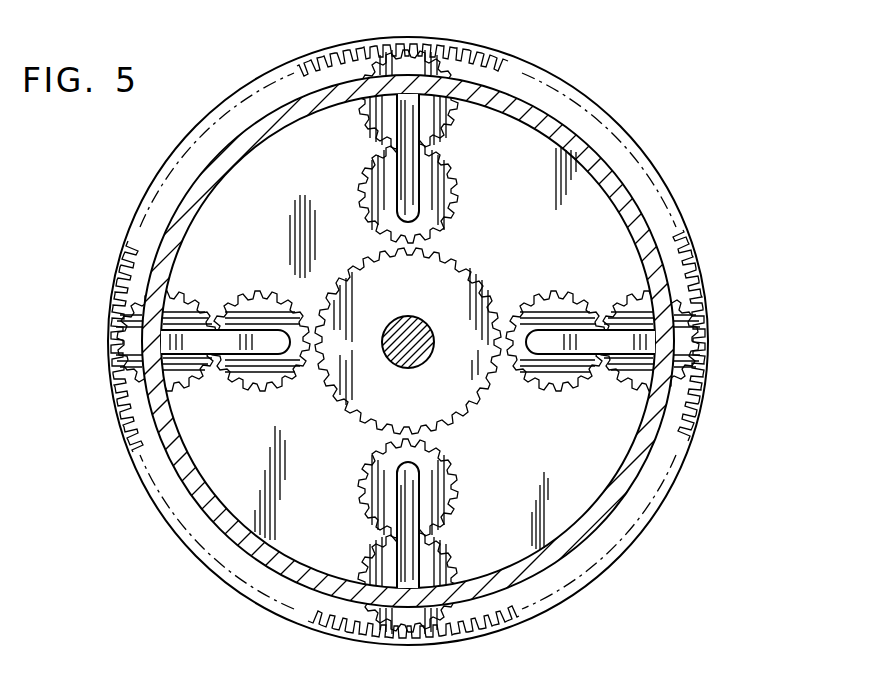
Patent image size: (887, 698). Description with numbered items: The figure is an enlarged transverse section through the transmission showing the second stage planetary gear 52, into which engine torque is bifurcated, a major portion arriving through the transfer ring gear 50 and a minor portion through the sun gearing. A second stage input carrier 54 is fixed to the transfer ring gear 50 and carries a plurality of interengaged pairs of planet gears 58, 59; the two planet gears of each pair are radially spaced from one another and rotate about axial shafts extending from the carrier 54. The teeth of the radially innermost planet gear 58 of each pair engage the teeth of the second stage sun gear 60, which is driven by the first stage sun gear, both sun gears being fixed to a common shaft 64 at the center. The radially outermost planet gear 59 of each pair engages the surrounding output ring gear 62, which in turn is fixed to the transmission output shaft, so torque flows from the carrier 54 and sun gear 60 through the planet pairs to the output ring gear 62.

The transfer ring gear 50 is at (621, 183).
The second stage planetary gear 52 is at (168, 553).
The second stage input carrier 54 is at (409, 120).
The radially innermost planet gear 58 is at (447, 180).
The radially outermost planet gear 59 is at (410, 62).
The second stage sun gear 60 is at (452, 300).
The output ring gear 62 is at (597, 99).
The common shaft 64 is at (413, 355).